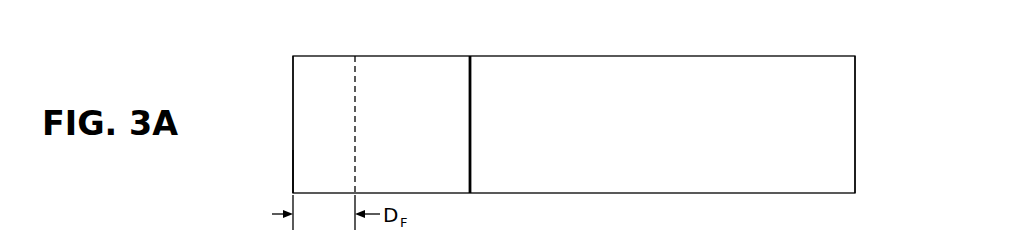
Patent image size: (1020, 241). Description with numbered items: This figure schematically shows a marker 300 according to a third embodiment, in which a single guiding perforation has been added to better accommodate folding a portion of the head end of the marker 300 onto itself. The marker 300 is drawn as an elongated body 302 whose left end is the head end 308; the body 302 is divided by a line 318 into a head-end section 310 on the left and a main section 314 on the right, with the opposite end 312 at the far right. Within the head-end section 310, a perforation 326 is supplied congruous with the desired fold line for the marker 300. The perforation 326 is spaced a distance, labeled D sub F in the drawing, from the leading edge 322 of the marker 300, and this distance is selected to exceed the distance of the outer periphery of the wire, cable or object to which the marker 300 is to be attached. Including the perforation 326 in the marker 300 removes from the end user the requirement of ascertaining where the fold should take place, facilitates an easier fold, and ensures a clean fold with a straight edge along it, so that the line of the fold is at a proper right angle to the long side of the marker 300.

The marker 300 is at (938, 76).
The optical fiber body 302 is at (556, 75).
The distal end face 308 is at (272, 106).
The first (tip) section 310 is at (422, 176).
The proximal end 312 is at (868, 148).
The second (main) section 314 is at (685, 131).
The boundary / interface 318 is at (470, 103).
The leading edge 322 is at (293, 150).
The perforation 326 is at (355, 87).